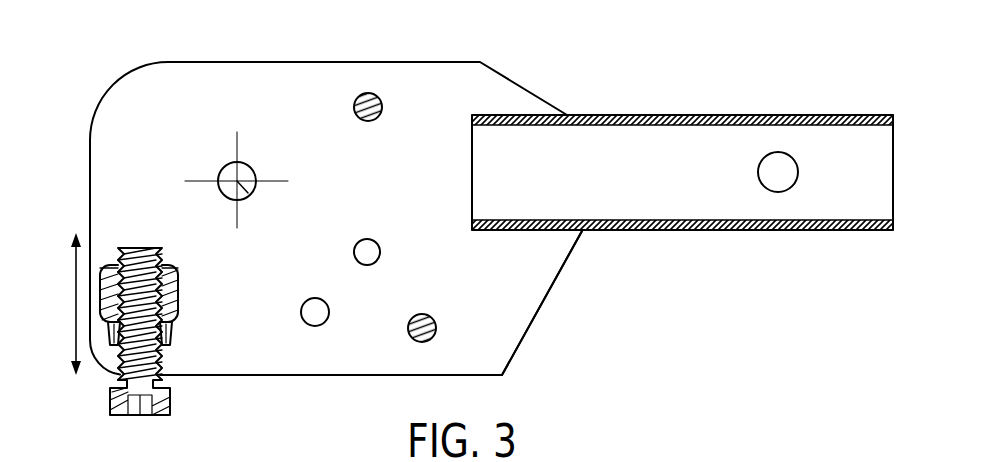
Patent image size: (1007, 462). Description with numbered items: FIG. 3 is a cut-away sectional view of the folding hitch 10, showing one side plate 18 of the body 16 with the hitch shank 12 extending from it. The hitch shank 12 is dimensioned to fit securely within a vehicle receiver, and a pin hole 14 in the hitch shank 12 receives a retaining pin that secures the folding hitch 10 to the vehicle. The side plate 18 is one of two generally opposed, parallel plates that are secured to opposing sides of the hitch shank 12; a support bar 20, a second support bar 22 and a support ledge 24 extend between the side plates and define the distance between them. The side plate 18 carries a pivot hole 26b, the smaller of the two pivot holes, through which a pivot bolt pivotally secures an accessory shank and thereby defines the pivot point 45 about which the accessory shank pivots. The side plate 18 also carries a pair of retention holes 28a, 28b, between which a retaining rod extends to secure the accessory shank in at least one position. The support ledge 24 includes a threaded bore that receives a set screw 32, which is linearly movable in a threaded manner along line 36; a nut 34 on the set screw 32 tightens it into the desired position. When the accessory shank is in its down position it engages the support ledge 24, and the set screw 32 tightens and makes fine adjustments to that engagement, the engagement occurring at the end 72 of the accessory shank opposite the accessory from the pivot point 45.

The folding hitch 10 is at (556, 68).
The hitch shank 12 is at (683, 115).
The pin hole 14 is at (767, 172).
The body 16 is at (325, 78).
The side plate 18 is at (541, 306).
The support bar 20 is at (372, 100).
The second support bar 22 is at (427, 320).
The support ledge 24 is at (177, 284).
The pivot hole 26b is at (235, 170).
The retention hole 28a is at (318, 304).
The retention hole 28b is at (370, 252).
The set screw 32 is at (130, 352).
The nut 34 is at (172, 334).
The line 36 is at (75, 302).
The pivot point 45 is at (248, 193).
The end 72 is at (166, 266).